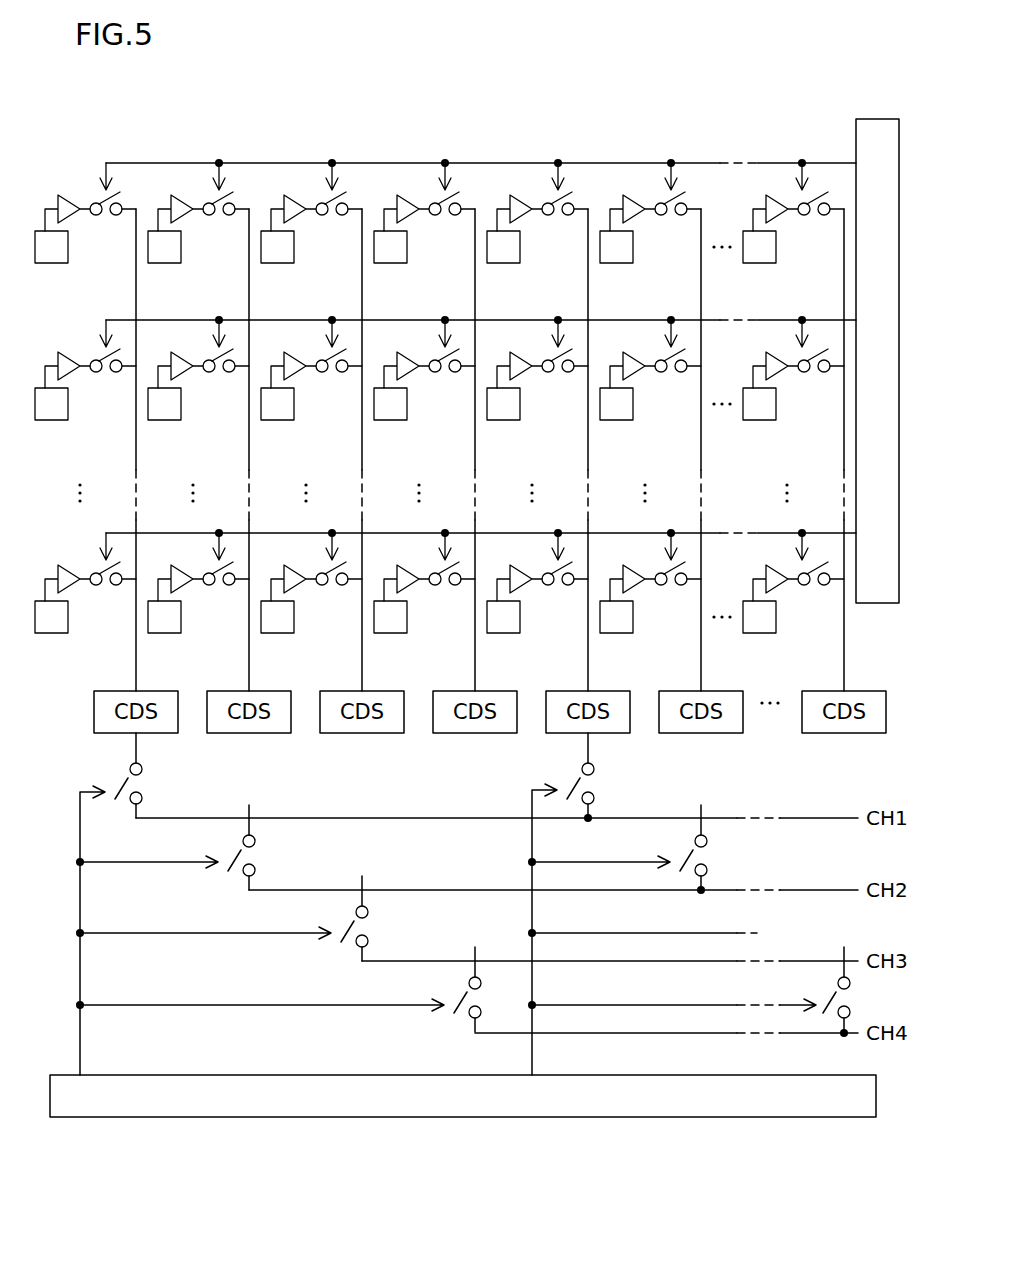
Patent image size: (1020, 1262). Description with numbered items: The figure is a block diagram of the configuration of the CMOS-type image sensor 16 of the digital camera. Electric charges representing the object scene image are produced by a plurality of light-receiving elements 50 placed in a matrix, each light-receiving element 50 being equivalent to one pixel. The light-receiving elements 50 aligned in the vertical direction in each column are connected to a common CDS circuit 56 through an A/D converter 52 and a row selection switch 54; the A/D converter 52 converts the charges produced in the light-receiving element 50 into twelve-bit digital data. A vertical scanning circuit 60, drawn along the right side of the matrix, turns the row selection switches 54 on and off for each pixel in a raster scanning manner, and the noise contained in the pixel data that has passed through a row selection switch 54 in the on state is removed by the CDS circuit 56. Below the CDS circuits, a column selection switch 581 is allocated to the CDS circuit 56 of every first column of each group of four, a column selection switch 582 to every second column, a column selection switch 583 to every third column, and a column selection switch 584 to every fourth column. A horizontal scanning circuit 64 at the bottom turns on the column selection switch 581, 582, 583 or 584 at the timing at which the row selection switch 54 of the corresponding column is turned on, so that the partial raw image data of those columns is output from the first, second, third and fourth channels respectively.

The image sensor 16 is at (81, 153).
The light-receiving element 50 is at (430, 443).
The A/D converter 52 is at (430, 410).
The row selection switch 54 is at (468, 404).
The CDS circuit 56 is at (479, 732).
The vertical scanning circuit 60 is at (870, 603).
The horizontal scanning circuit 64 is at (193, 1075).
The column selection switch 581 is at (381, 775).
The column selection switch 582 is at (494, 847).
The column selection switch 583 is at (381, 918).
The column selection switch 584 is at (621, 989).